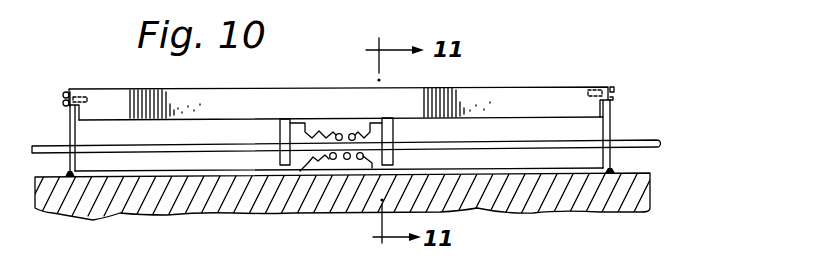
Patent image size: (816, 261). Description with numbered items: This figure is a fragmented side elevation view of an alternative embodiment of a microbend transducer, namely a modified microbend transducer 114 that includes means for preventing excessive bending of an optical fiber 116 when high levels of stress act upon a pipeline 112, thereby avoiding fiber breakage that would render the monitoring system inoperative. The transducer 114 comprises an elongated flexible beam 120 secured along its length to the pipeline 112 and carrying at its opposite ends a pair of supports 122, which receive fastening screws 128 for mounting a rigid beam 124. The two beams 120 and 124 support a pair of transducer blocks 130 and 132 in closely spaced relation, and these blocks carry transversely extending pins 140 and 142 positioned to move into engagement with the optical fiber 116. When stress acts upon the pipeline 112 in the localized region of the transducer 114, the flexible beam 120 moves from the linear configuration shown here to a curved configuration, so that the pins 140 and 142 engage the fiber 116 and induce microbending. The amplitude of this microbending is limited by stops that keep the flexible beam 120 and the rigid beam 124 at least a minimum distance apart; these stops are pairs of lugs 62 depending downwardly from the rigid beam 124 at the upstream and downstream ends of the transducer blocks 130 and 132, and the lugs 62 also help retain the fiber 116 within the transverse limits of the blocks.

The lugs 62 is at (285, 133).
The pipeline 112 is at (617, 198).
The modified microbend transducer 114 is at (364, 145).
The optical fiber 116 is at (639, 147).
The flexible beam 120 is at (501, 172).
The supports 122 is at (610, 130).
The rigid beam 124 is at (466, 100).
The fastening screws 128 is at (613, 97).
The transducer block 130 is at (300, 170).
The transducer block 132 is at (316, 126).
The pins 140 is at (352, 160).
The pins 142 is at (338, 133).